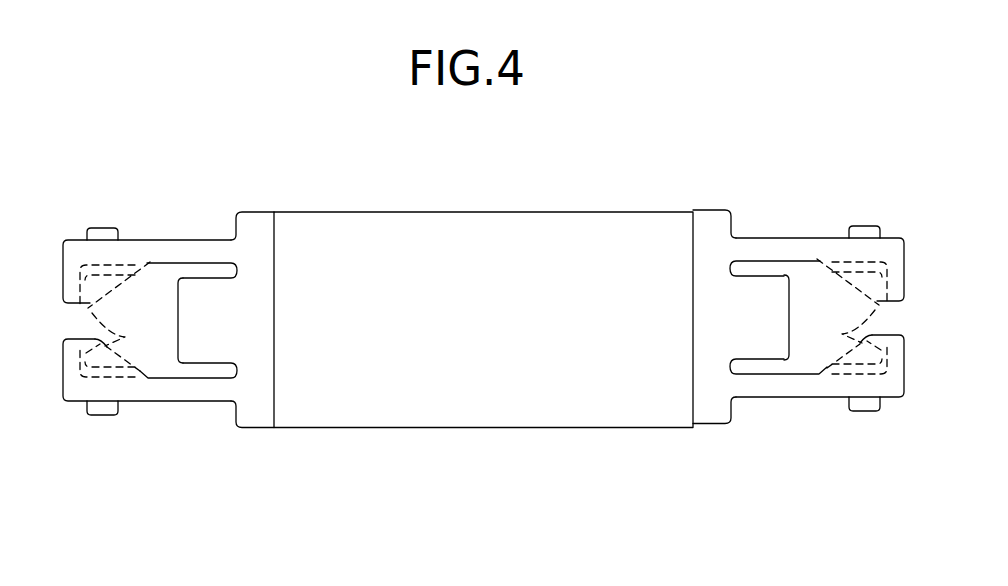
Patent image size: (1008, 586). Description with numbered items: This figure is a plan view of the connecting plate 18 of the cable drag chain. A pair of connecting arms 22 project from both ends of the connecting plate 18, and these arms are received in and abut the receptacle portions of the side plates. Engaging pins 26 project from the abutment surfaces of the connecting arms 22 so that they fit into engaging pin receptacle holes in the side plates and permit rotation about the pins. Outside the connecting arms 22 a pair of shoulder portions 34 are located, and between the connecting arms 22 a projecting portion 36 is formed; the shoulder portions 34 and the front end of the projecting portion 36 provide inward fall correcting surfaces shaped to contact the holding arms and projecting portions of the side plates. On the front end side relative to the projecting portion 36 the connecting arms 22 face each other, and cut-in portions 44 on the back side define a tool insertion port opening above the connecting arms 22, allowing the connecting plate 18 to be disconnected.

The connecting plate 18 is at (510, 430).
The connecting arm 22 is at (161, 247).
The engaging pin 26 is at (103, 228).
The shoulder portion 34 is at (236, 230).
The projecting portion 36 is at (178, 315).
The cut-in portion 44 is at (126, 337).